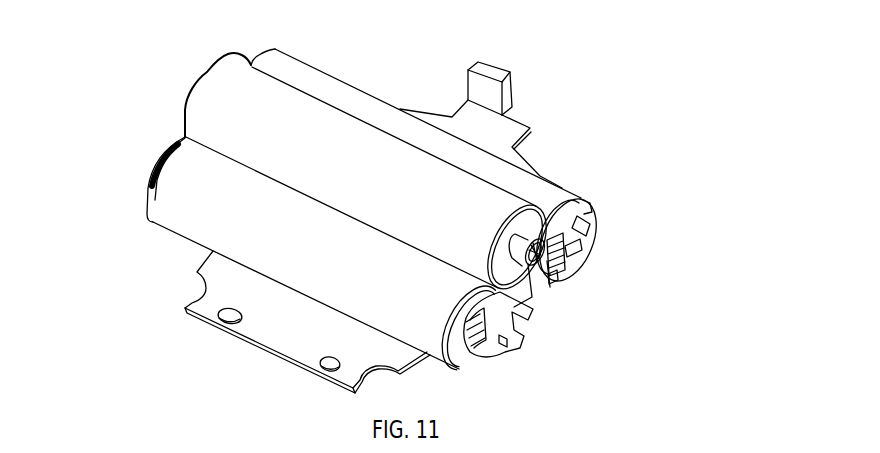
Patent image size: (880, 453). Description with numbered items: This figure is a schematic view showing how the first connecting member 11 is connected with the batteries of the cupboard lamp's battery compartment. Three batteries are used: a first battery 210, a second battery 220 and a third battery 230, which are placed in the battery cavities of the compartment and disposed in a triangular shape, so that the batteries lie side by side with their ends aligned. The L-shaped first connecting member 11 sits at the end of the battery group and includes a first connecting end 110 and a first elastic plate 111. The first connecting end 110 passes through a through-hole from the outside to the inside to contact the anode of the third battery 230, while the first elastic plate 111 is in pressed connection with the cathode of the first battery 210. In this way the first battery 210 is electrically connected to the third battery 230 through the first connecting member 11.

The first battery 210 is at (363, 102).
The second battery 220 is at (202, 213).
The third battery 230 is at (207, 97).
The first connecting member 11 is at (660, 239).
The first connecting end 110 is at (532, 267).
The first elastic plate 111 is at (582, 198).